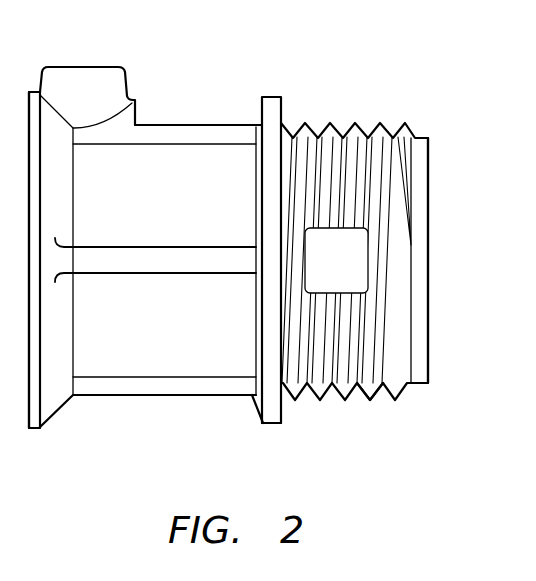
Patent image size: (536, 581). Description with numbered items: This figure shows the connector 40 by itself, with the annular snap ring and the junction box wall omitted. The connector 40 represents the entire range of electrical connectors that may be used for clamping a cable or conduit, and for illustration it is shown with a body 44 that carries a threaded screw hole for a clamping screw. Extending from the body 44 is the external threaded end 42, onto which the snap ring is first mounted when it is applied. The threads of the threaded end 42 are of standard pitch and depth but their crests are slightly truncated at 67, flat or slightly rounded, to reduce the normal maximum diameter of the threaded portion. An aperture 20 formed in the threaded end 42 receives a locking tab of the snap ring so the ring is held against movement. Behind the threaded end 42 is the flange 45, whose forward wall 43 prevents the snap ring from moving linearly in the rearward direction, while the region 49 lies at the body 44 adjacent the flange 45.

The aperture 20 is at (321, 270).
The connector 40 is at (276, 90).
The external threaded end 42 is at (413, 136).
The forward wall 43 is at (282, 107).
The body 44 is at (138, 222).
The flange 45 is at (271, 425).
The annular lip 49 is at (188, 95).
The truncation 67 is at (371, 401).